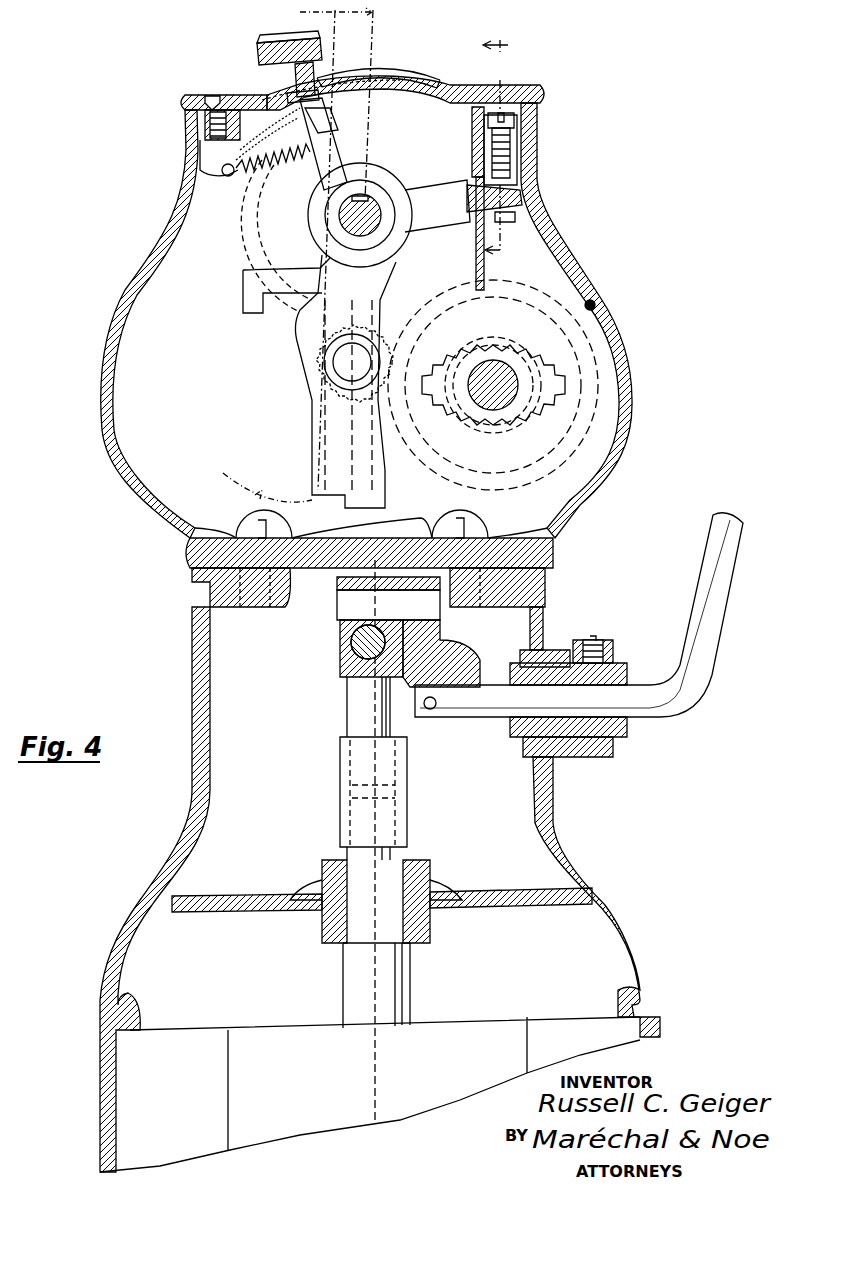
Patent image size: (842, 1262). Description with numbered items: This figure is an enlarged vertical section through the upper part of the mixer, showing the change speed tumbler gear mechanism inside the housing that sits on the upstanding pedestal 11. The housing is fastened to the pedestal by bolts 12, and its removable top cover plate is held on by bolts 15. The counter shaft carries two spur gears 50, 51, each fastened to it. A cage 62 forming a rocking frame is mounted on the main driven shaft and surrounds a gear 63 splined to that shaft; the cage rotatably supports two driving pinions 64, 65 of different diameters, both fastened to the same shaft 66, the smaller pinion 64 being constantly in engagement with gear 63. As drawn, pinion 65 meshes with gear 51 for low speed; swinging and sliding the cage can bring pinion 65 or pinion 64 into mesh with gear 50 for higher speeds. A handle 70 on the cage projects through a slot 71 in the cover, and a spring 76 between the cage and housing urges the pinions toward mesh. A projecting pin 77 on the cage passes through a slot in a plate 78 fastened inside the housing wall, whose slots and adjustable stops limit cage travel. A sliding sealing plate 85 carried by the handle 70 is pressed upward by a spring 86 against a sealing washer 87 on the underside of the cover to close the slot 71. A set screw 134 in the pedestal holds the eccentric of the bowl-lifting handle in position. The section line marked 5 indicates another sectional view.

The section line 5- 5 is at (485, 152).
The pedestal 11 is at (190, 823).
The bolts 12 is at (215, 522).
The bolts 15 is at (215, 92).
The spur gear 50 is at (565, 345).
The spur gear 51 is at (520, 418).
The cage 62 is at (243, 308).
The gear 63 is at (272, 217).
The driving pinion 64 is at (305, 368).
The driving pinion 65 is at (268, 400).
The shaft 66 is at (345, 365).
The handle 70 is at (258, 46).
The slot 71 is at (378, 66).
The spring 76 is at (300, 170).
The projecting pin 77 is at (490, 205).
The plate 78 is at (500, 275).
The sliding sealing plate 85 is at (205, 118).
The spring 86 is at (272, 105).
The sealing washer 87 is at (415, 96).
The set screw 134 is at (596, 642).